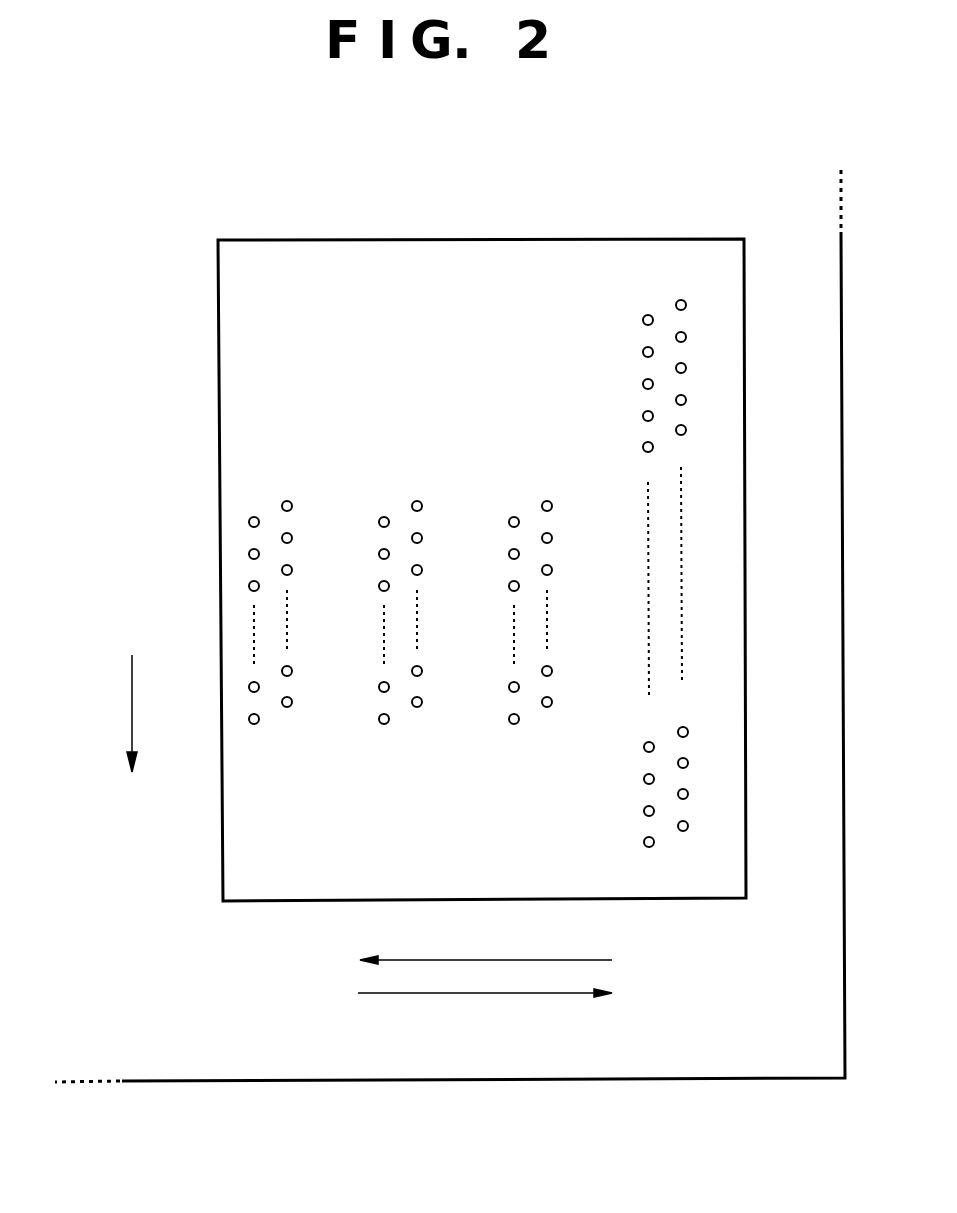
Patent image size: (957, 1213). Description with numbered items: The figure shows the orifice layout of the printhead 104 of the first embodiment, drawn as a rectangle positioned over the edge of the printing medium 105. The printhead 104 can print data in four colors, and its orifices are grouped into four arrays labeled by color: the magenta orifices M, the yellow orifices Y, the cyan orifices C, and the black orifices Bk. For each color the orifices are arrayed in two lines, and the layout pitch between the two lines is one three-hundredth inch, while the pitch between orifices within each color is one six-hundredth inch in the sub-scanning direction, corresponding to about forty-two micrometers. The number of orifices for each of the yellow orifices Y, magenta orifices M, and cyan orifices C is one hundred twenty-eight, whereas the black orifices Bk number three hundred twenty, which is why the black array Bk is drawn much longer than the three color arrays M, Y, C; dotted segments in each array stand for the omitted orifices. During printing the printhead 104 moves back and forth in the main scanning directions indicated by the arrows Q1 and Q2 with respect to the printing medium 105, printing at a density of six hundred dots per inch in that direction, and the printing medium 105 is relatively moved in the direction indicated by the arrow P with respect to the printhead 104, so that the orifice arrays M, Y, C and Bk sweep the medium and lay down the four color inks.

The printhead 104 is at (473, 240).
The printing medium 105 is at (553, 1082).
The magenta orifice array M is at (270, 562).
The yellow orifice array Y is at (400, 562).
The cyan orifice array C is at (530, 562).
The black orifice array Bk is at (665, 554).
The printing medium feed direction P is at (140, 713).
The main scanning direction Q1 is at (505, 995).
The main scanning direction Q2 is at (506, 961).